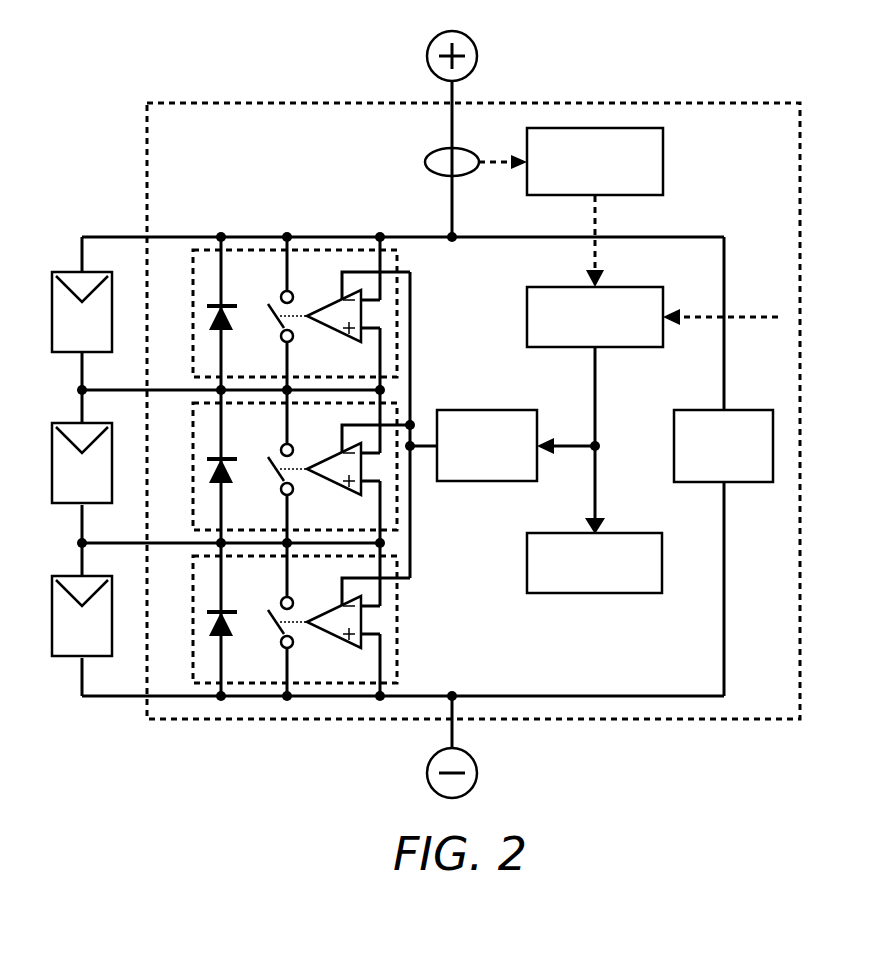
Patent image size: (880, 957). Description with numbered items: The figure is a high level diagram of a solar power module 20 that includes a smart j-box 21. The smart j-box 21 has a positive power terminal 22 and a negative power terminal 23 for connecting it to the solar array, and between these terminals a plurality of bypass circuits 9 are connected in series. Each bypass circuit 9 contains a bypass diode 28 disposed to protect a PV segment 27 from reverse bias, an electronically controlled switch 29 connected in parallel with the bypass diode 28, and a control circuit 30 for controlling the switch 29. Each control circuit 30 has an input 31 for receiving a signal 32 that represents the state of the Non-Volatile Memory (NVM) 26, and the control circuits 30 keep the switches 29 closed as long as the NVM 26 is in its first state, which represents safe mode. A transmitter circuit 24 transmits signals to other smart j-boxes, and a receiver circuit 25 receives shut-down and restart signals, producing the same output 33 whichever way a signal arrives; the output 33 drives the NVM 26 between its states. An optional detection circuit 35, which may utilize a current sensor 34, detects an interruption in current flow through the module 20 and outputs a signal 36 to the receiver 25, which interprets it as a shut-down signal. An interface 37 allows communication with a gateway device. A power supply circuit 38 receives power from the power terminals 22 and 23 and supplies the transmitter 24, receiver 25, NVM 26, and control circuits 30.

The solar power module 20 is at (156, 56).
The smart j-box 21 is at (147, 166).
The positive power terminal 22 is at (471, 242).
The negative power terminal 23 is at (472, 693).
The transmitter circuit 24 is at (595, 593).
The receiver circuit 25 is at (645, 287).
The Non-Volatile Memory (NVM) 26 is at (468, 410).
The PV segment 27 is at (52, 316).
The bypass diode 28 is at (238, 304).
The electronically controlled switch 29 is at (273, 328).
The control circuit 30 is at (327, 330).
The input 31 is at (340, 300).
The signal 32 is at (413, 543).
The output 33 is at (598, 410).
The current sensor 34 is at (467, 152).
The detection circuit 35 is at (665, 163).
The signal 36 is at (598, 218).
The interface 37 is at (756, 317).
The power supply circuit 38 is at (696, 410).
The bypass circuit 9 is at (193, 328).